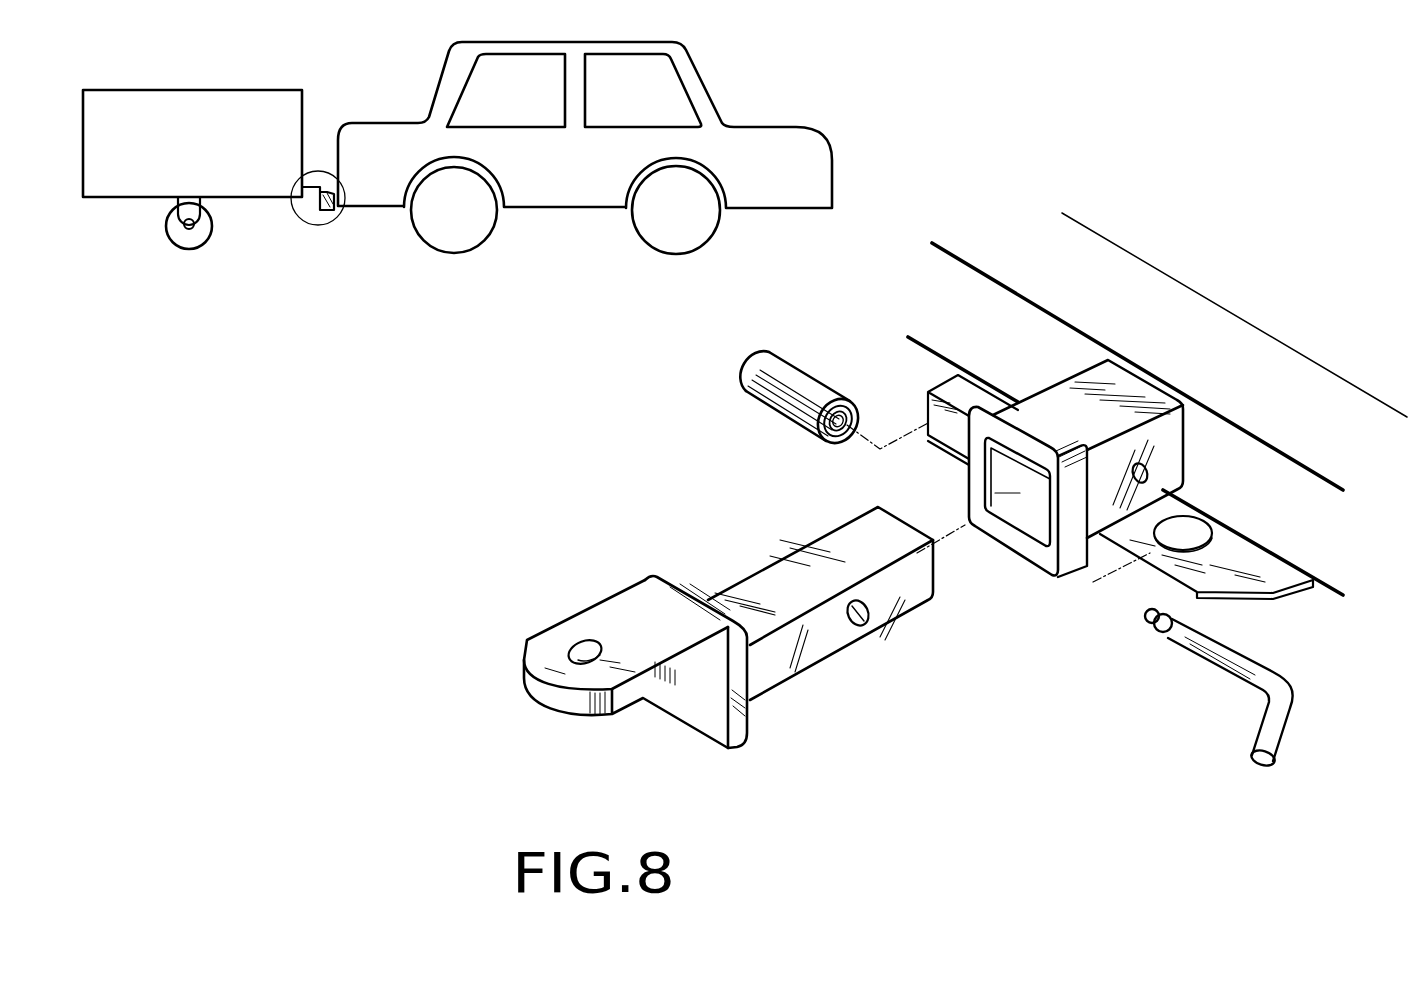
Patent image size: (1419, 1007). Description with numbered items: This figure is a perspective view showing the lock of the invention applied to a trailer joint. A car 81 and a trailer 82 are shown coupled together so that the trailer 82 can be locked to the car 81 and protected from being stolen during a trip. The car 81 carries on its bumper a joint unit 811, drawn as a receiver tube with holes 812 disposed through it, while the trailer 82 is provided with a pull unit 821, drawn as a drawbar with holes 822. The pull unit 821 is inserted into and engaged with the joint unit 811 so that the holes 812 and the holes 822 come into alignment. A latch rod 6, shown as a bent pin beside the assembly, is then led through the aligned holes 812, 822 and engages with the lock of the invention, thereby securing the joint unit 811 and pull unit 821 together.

The car 81 is at (560, 197).
The trailer 82 is at (109, 187).
The joint unit 811 is at (1130, 383).
The holes 812 is at (1145, 455).
The pull unit 821 is at (767, 677).
The holes 822 is at (858, 626).
The latch rod 6 is at (1188, 695).